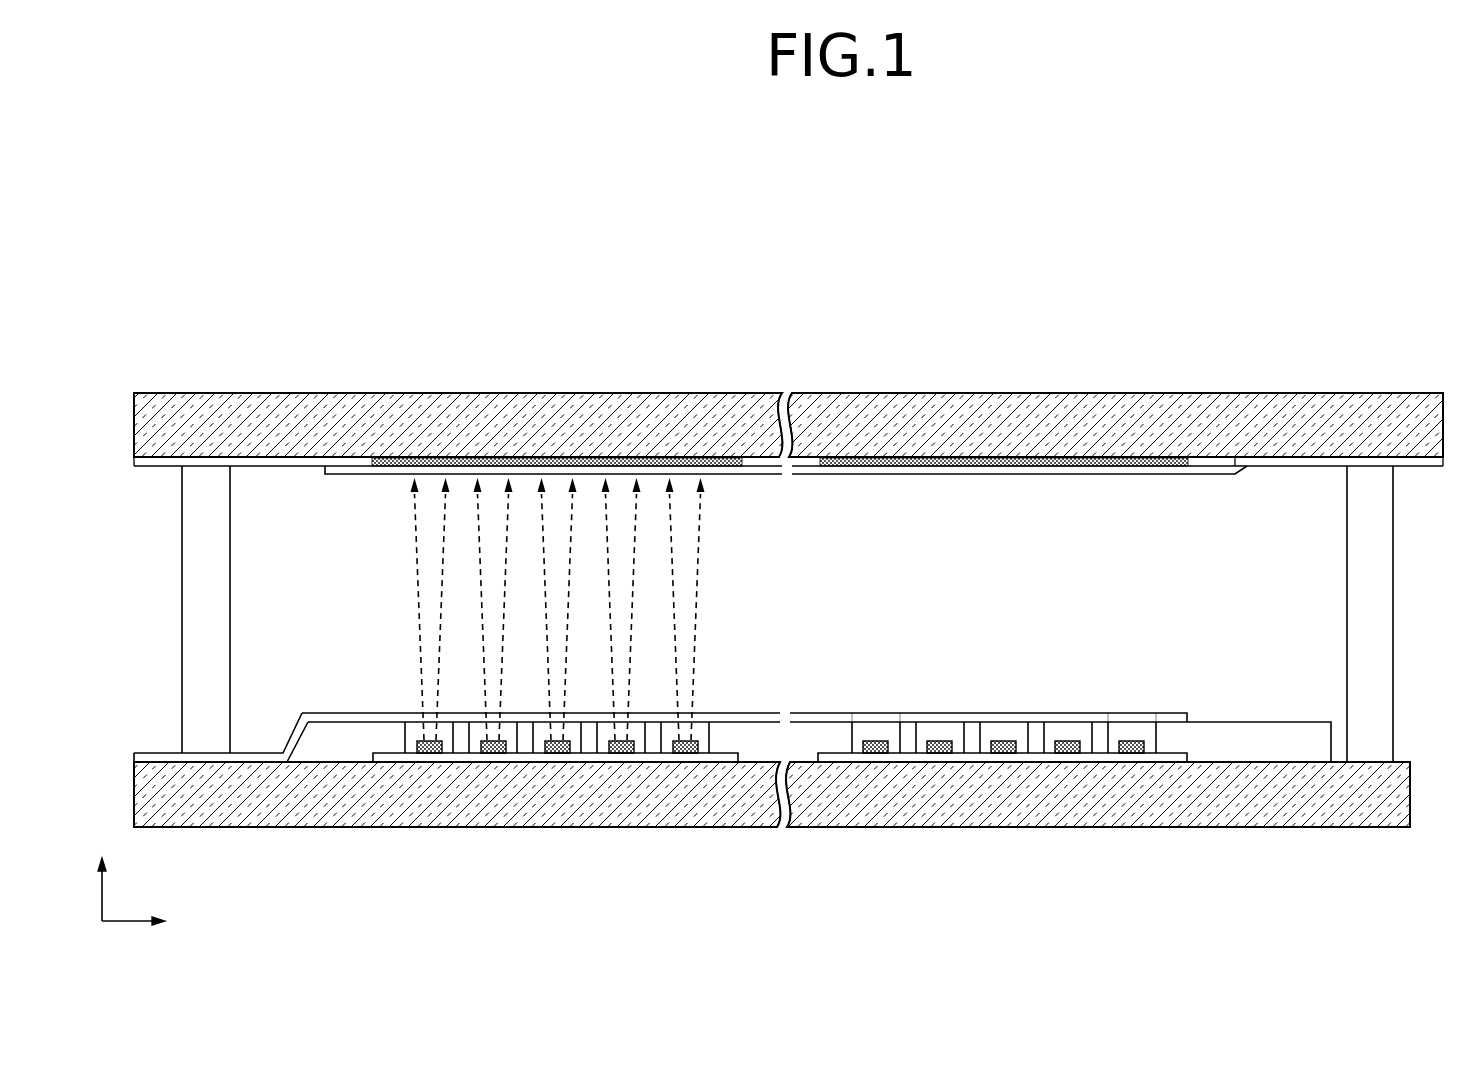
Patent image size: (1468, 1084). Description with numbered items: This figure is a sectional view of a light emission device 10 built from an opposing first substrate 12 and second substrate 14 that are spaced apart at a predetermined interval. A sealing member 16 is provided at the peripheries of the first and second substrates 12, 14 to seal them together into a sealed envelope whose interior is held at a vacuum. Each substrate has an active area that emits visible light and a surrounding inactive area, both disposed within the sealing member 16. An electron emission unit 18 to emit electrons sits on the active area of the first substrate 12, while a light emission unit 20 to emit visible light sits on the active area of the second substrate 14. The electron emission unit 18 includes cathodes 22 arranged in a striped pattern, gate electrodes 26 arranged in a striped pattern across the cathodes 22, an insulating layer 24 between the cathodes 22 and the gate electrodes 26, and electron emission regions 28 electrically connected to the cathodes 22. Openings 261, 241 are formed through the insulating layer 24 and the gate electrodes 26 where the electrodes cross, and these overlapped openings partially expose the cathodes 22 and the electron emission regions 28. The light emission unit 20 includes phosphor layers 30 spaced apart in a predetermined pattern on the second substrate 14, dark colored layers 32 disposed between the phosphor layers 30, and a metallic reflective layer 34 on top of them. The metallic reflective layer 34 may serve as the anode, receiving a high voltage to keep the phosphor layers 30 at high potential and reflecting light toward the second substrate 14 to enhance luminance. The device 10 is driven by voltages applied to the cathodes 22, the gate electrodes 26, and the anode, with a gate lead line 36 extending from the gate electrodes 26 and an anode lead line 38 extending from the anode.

The light emission device 10 is at (1359, 349).
The first substrate 12 is at (1062, 805).
The second substrate 14 is at (862, 415).
The sealing member 16 is at (1385, 632).
The electron emission unit 18 is at (1036, 683).
The light emission unit 20 is at (972, 493).
The cathodes 22 is at (525, 757).
The insulating layer 24 is at (1236, 740).
The openings 241 is at (1130, 735).
The gate electrodes 26 is at (745, 712).
The openings 261 is at (882, 726).
The electron emission regions 28 is at (988, 735).
The phosphor layers 30 is at (572, 458).
The dark colored layers 32 is at (762, 462).
The metallic reflective layer 34 is at (658, 470).
The gate lead line 36 is at (152, 757).
The anode lead line 38 is at (1420, 462).